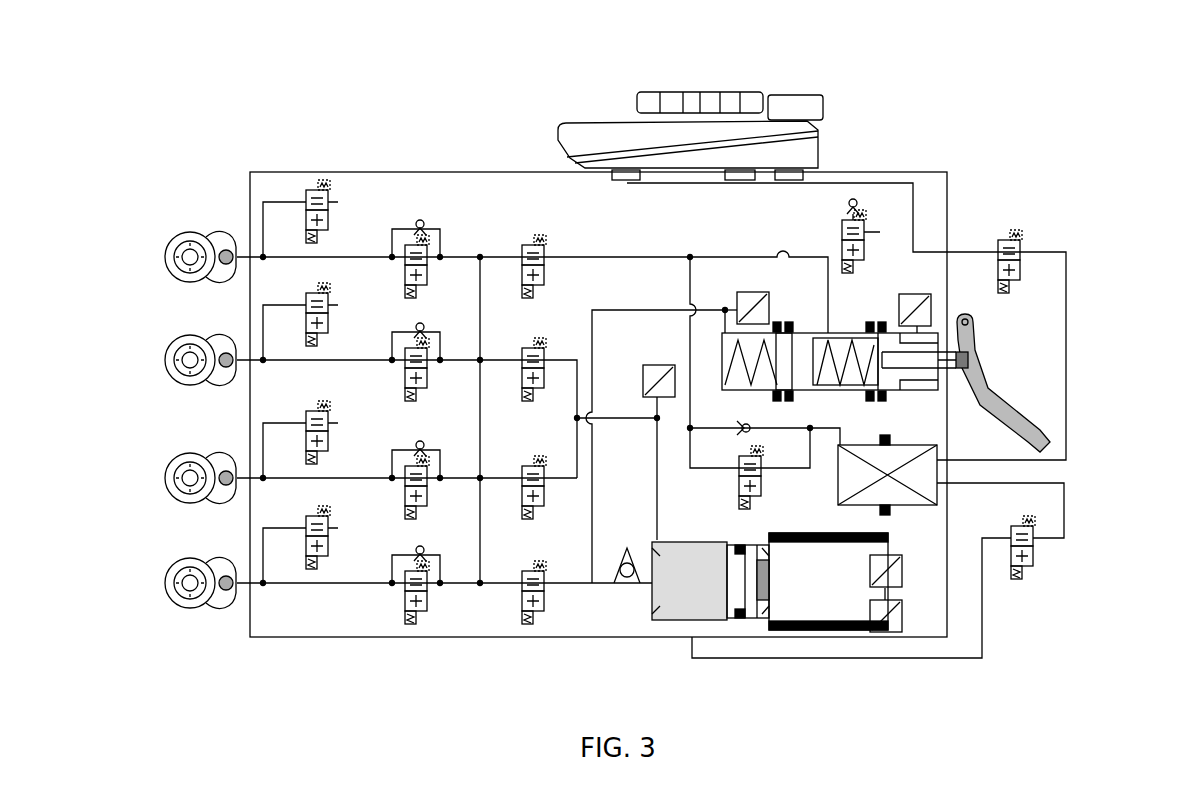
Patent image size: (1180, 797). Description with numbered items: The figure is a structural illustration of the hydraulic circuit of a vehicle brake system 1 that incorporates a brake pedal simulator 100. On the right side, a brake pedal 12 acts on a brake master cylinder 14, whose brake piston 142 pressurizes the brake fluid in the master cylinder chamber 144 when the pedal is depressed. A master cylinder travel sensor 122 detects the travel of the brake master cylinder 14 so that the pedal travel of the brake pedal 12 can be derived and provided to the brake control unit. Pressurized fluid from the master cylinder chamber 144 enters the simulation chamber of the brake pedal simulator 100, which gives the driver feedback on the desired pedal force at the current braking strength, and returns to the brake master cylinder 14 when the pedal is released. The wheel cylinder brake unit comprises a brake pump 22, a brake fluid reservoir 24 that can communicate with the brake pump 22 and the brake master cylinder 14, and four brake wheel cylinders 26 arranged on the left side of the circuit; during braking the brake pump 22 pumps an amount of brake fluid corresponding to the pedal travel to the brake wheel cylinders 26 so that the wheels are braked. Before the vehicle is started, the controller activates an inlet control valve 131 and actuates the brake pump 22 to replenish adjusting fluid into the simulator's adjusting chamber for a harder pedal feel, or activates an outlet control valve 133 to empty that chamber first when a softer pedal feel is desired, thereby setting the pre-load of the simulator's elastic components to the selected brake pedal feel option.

The vehicle brake system 1 is at (400, 48).
The brake pedal 12 is at (1000, 383).
The brake master cylinder 14 is at (883, 256).
The brake pump 22 is at (758, 640).
The brake fluid reservoir 24 is at (650, 92).
The brake wheel cylinders 26 is at (163, 257).
The brake pedal simulator 100 is at (930, 488).
The master cylinder travel sensor 122 is at (935, 303).
The inlet control valve 131 is at (1033, 560).
The outlet control valve 133 is at (1020, 267).
The brake piston 142 is at (897, 357).
The master cylinder chamber 144 is at (868, 350).